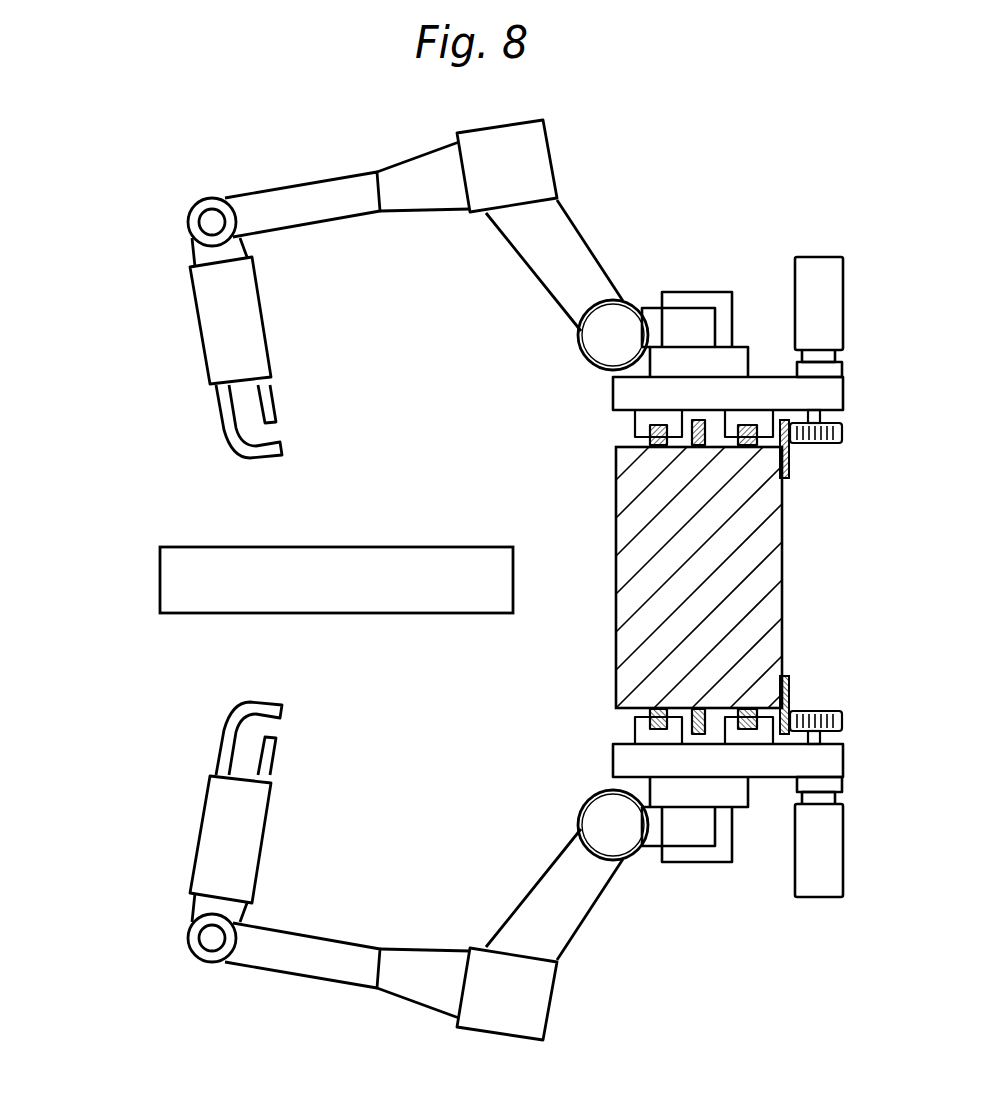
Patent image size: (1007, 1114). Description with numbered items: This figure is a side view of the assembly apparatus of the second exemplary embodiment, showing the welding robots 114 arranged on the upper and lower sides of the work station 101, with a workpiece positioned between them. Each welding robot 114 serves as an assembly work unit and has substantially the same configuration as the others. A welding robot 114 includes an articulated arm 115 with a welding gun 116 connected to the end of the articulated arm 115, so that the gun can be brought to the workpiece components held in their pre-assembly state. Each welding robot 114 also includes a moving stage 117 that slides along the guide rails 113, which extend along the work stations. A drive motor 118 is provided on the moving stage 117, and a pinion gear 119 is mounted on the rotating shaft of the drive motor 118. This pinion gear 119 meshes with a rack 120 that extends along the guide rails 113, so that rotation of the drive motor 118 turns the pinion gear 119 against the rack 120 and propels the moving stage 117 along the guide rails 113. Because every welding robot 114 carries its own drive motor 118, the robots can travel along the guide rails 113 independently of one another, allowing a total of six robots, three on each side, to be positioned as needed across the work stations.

The first work station 101 is at (163, 533).
The guide rails 113 is at (740, 423).
The welding robot 114 is at (670, 292).
The articulated arm 115 is at (406, 168).
The welding gun 116 is at (258, 343).
The moving stage 117 is at (770, 385).
The drive motor 118 is at (838, 276).
The pinion gear 119 is at (842, 432).
The rack 120 is at (792, 445).